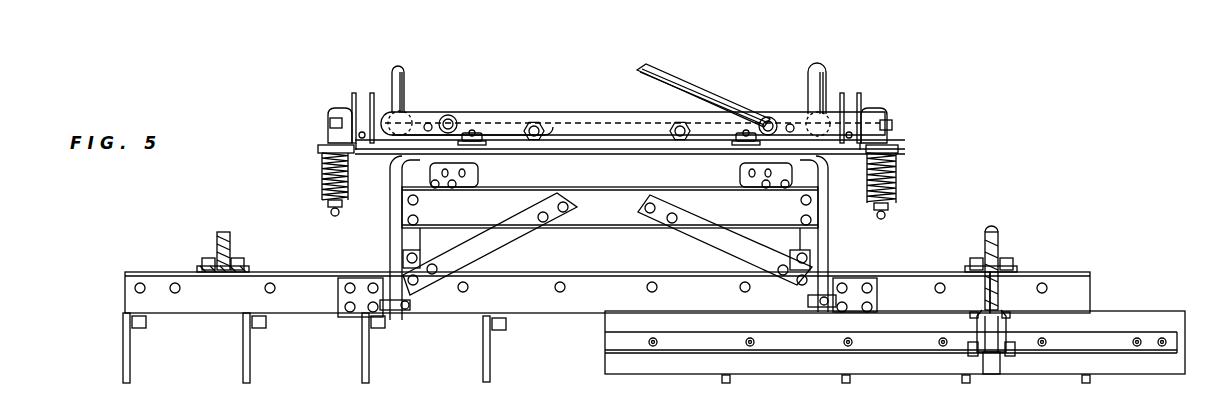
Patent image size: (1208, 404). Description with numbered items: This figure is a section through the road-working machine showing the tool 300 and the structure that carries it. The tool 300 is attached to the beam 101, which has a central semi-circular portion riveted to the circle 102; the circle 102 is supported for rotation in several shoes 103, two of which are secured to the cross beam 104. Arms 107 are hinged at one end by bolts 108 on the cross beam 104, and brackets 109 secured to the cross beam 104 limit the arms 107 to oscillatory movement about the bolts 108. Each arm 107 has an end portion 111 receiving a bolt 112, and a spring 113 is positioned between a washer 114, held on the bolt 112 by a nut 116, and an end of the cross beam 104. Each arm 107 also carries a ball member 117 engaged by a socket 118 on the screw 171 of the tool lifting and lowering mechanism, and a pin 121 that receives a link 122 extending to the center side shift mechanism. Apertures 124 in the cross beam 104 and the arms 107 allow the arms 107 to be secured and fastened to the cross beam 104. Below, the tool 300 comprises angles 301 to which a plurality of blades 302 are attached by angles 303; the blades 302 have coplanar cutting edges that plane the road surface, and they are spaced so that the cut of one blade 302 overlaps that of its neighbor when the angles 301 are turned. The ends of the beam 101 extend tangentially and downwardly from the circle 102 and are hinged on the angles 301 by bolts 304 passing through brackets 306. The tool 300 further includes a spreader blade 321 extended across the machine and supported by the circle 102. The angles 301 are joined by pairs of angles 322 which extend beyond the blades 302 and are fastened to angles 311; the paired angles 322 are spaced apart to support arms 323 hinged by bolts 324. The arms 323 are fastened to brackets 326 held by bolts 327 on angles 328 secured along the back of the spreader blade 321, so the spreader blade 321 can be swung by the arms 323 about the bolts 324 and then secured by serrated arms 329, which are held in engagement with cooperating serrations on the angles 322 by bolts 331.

The beam 101 is at (390, 240).
The circle 102 is at (580, 200).
The shoes 103 is at (498, 150).
The cross beam 104 is at (562, 130).
The arms 107 is at (492, 128).
The bolts 108 is at (535, 122).
The brackets 109 is at (362, 100).
The end portion 111 is at (338, 112).
The bolt 112 is at (330, 124).
The spring 113 is at (318, 149).
The washer 114 is at (322, 182).
The nut 116 is at (342, 206).
The ball member 117 is at (362, 154).
The socket 118 is at (429, 122).
The pin 121 is at (450, 116).
The link 122 is at (670, 72).
The apertures 124 is at (434, 181).
The screw 171 is at (406, 92).
The tool 300 is at (905, 270).
The angles 301 is at (1080, 292).
The blades 302 is at (122, 346).
The angles 303 is at (148, 322).
The bolts 304 is at (410, 308).
The brackets 306 is at (384, 322).
The angles 311 is at (1082, 272).
The spreader blade 321 is at (1148, 322).
The angles 322 is at (206, 262).
The arms 323 is at (1042, 242).
The bolts 324 is at (246, 268).
The brackets 326 is at (983, 360).
The bolts 327 is at (968, 360).
The angles 328 is at (891, 343).
The serrated arms 329 is at (997, 232).
The bolts 331 is at (968, 266).